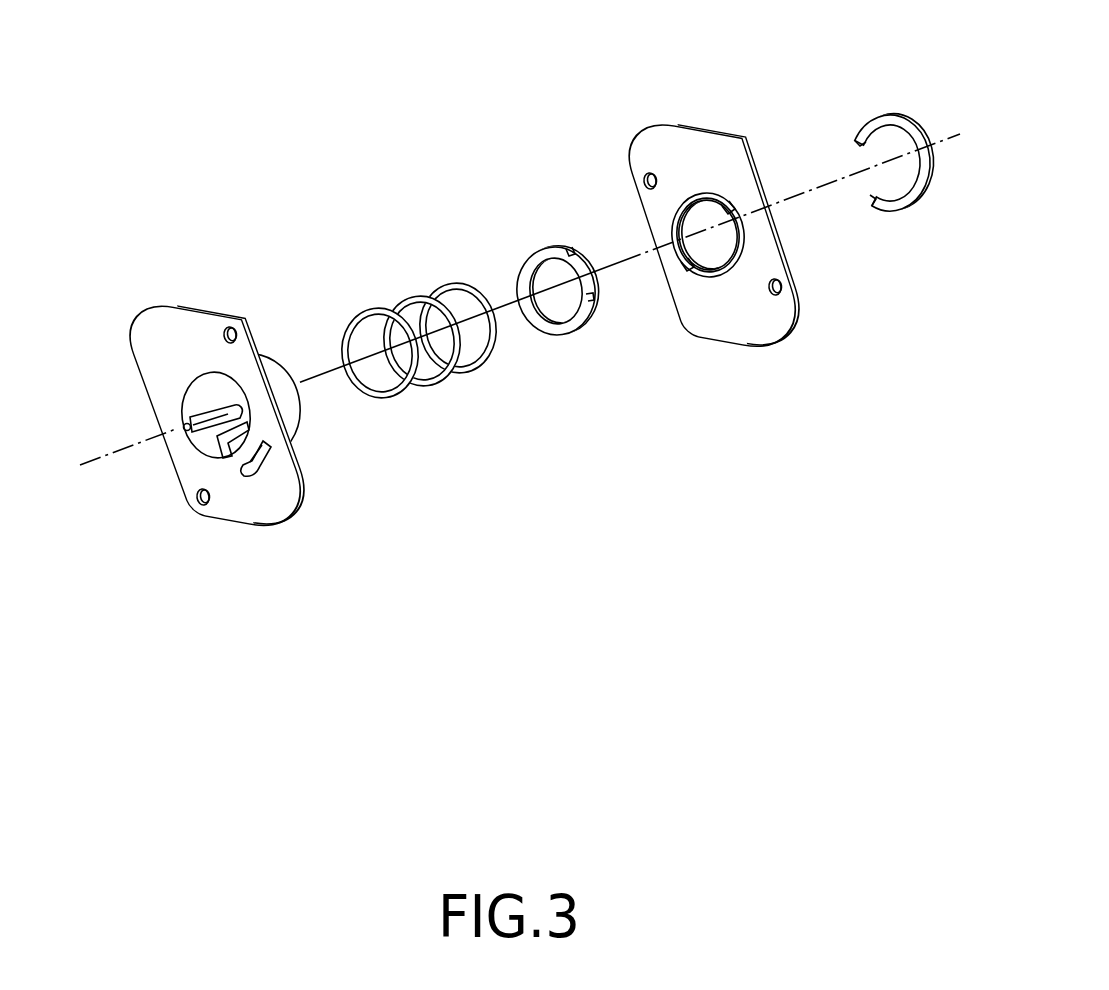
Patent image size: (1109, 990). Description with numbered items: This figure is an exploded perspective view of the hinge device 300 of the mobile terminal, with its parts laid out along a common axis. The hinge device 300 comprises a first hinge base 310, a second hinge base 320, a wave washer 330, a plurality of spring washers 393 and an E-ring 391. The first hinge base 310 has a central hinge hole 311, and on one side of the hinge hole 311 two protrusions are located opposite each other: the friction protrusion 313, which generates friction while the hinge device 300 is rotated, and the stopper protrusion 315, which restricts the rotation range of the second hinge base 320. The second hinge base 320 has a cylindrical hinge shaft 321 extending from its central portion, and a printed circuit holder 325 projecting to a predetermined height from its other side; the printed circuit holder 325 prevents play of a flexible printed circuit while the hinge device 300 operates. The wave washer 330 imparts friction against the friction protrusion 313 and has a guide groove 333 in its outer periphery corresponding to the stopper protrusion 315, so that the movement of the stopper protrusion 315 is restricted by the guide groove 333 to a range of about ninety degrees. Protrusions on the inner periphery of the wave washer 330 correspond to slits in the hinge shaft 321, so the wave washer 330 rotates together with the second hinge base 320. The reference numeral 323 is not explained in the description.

The hinge device 300 is at (260, 109).
The first hinge base 310 is at (703, 213).
The hinge hole 311 is at (720, 252).
The friction protrusion 313 is at (692, 270).
The stopper protrusion 315 is at (722, 205).
The second hinge base 320 is at (185, 292).
The hinge shaft 321 is at (280, 388).
The hook 323 is at (238, 424).
The printed circuit holder 325 is at (258, 472).
The wave washer 330 is at (559, 313).
The guide groove 333 is at (587, 266).
The E-ring 391 is at (890, 117).
The spring washers 393 is at (407, 278).